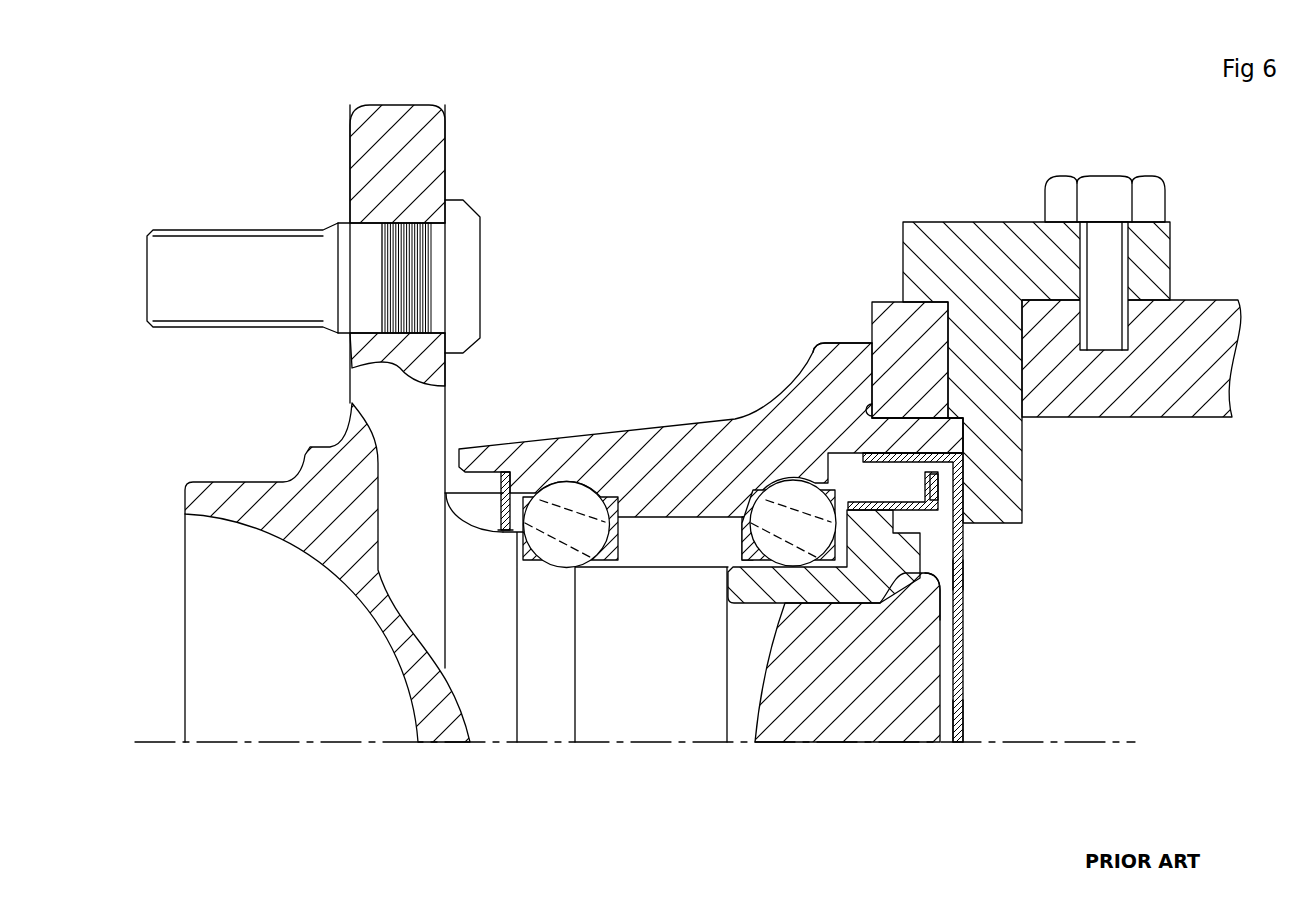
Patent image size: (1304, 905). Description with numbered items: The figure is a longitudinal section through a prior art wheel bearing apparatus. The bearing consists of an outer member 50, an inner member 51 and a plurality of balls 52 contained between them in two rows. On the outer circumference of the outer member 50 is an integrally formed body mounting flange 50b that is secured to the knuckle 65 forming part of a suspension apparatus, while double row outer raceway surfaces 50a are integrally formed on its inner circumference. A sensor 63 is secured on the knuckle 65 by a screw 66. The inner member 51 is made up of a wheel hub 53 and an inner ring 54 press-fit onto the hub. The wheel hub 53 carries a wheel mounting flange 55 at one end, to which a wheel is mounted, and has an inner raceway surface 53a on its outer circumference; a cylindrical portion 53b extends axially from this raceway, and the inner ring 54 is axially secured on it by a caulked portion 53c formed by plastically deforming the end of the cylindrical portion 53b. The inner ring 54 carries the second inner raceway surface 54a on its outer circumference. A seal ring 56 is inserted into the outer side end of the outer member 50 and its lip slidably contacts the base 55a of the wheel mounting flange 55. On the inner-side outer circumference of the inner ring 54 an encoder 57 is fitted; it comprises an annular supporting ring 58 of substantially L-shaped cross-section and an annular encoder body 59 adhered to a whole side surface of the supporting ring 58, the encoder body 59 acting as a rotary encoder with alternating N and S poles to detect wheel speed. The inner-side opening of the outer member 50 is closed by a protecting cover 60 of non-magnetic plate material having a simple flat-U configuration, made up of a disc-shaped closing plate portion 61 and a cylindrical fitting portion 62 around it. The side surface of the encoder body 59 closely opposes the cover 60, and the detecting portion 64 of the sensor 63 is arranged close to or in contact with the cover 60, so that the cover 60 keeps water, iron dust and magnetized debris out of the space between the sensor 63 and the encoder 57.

The outer member 50 is at (670, 470).
The outer raceway surface 50a is at (570, 515).
The body mounting flange 50b is at (838, 355).
The inner member 51 is at (525, 670).
The balls 52 is at (538, 462).
The wheel hub 53 is at (420, 647).
The inner raceway surface 53a is at (552, 545).
The cylindrical portion 53b is at (893, 578).
The caulked portion 53c is at (935, 597).
The inner ring 54 is at (792, 592).
The inner raceway surface 54a is at (780, 540).
The wheel mounting flange 55 is at (385, 148).
The base of the wheel mounting flange 55a is at (496, 522).
The seal ring 56 is at (468, 500).
The encoder 57 is at (983, 515).
The supporting ring 58 is at (963, 573).
The encoder body 59 is at (955, 503).
The protecting cover 60 is at (980, 609).
The closing plate portion 61 is at (965, 688).
The cylindrical fitting portion 62 is at (893, 453).
The sensor 63 is at (990, 250).
The detecting portion 64 is at (993, 448).
The knuckle 65 is at (893, 320).
The screw 66 is at (1103, 222).